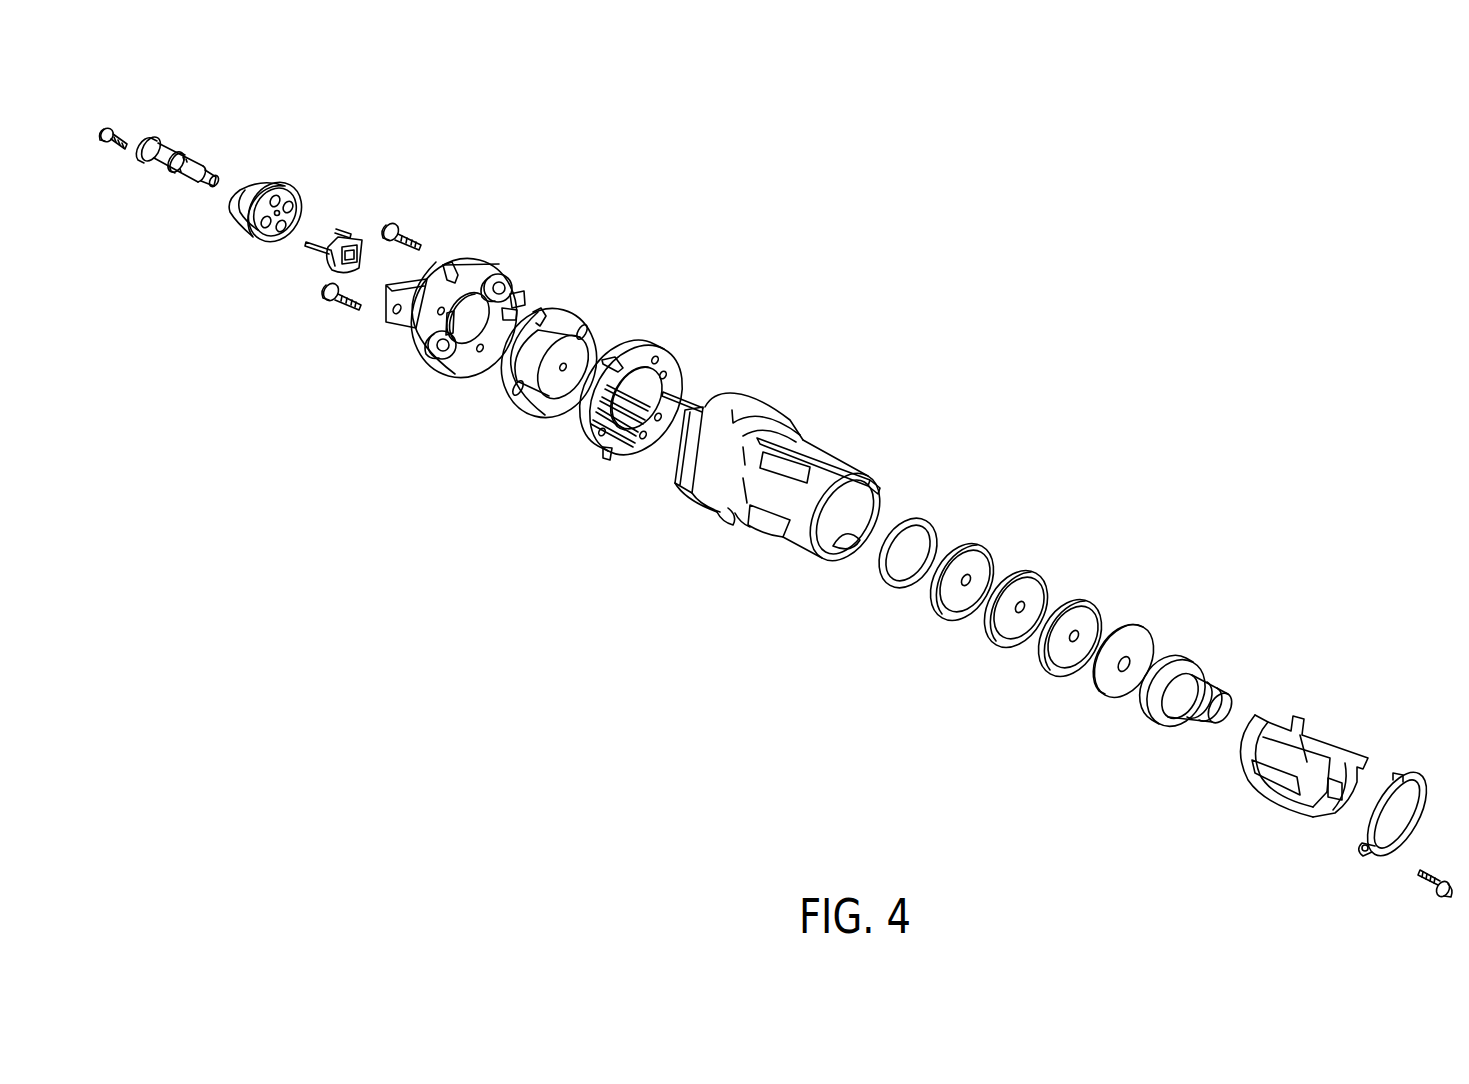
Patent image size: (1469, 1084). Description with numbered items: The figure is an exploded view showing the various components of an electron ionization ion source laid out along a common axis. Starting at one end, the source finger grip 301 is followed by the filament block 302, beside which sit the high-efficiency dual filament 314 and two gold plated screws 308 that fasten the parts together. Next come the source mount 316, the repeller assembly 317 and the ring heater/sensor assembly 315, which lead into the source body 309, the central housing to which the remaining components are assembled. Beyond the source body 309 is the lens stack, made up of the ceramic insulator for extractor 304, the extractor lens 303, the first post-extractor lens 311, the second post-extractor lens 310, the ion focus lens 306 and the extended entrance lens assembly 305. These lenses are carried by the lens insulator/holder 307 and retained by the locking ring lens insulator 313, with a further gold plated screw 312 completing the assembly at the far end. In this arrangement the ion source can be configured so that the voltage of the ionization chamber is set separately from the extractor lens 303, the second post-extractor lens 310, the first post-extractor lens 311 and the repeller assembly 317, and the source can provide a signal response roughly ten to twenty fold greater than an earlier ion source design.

The source finger grip 301 is at (185, 177).
The filament block 302 is at (249, 240).
The extractor lens 303 is at (938, 610).
The ceramic insulator for extractor 304 is at (888, 584).
The extended entrance lens assembly 305 is at (1150, 722).
The ion focus lens 306 is at (1100, 696).
The lens insulator/holder 307 is at (1258, 788).
The gold plated screw 308 is at (411, 232).
The source body 309 is at (695, 520).
The post-extractor lens 2 310 is at (1048, 668).
The post-extractor lens 1 311 is at (995, 638).
The gold plated screw 312 is at (114, 130).
The locking ring lens insulator 313 is at (1360, 853).
The high-efficiency dual filament 314 is at (310, 262).
The ring heater/sensor assembly 315 is at (611, 458).
The source mount 316 is at (440, 374).
The repeller assembly 317 is at (527, 420).